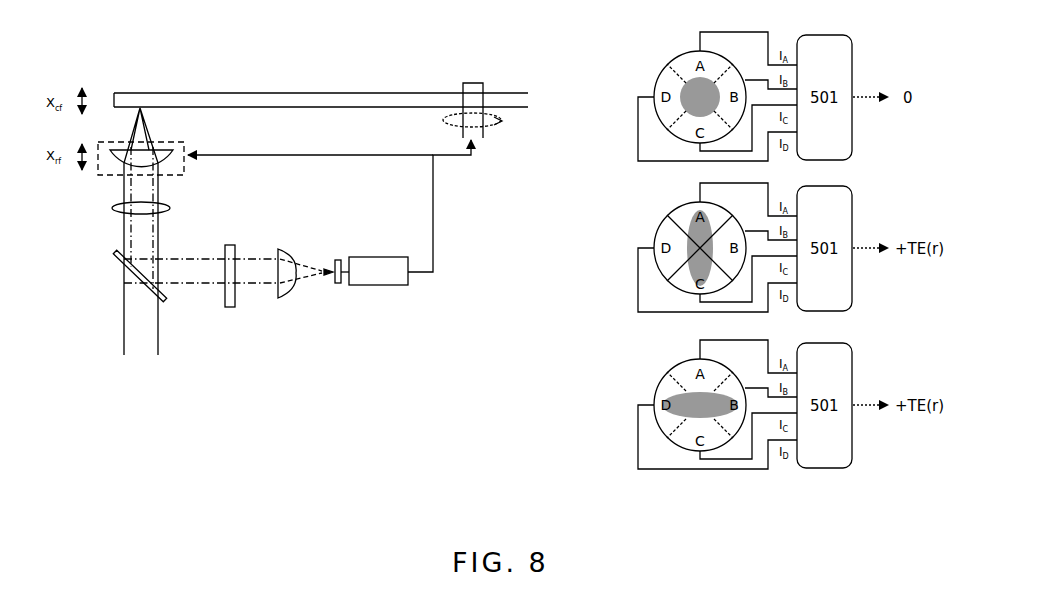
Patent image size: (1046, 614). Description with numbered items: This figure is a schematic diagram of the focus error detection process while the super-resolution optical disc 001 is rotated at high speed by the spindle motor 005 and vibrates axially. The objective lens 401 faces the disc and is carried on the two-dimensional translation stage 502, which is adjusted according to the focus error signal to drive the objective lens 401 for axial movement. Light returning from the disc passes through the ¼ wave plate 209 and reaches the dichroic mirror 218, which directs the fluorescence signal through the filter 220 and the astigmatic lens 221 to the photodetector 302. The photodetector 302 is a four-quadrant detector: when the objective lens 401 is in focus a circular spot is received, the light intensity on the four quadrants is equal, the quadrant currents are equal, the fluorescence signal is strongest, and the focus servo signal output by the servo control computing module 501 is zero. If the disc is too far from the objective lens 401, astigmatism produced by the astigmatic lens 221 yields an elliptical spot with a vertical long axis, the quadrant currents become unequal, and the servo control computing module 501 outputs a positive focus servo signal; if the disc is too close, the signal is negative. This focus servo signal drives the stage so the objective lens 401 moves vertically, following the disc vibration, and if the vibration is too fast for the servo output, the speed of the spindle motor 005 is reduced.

The super-resolution optical disc 001 is at (288, 100).
The spindle motor 005 is at (473, 95).
The objective lens 401 is at (168, 147).
The two-dimensional translation stage 502 is at (184, 175).
The ¼ wave plate 209 is at (171, 208).
The dichroic mirror 218 is at (115, 255).
The filter 220 is at (229, 308).
The astigmatic lens 221 is at (286, 300).
The photodetector 302 is at (338, 285).
The servo control computing module 501 is at (374, 271).